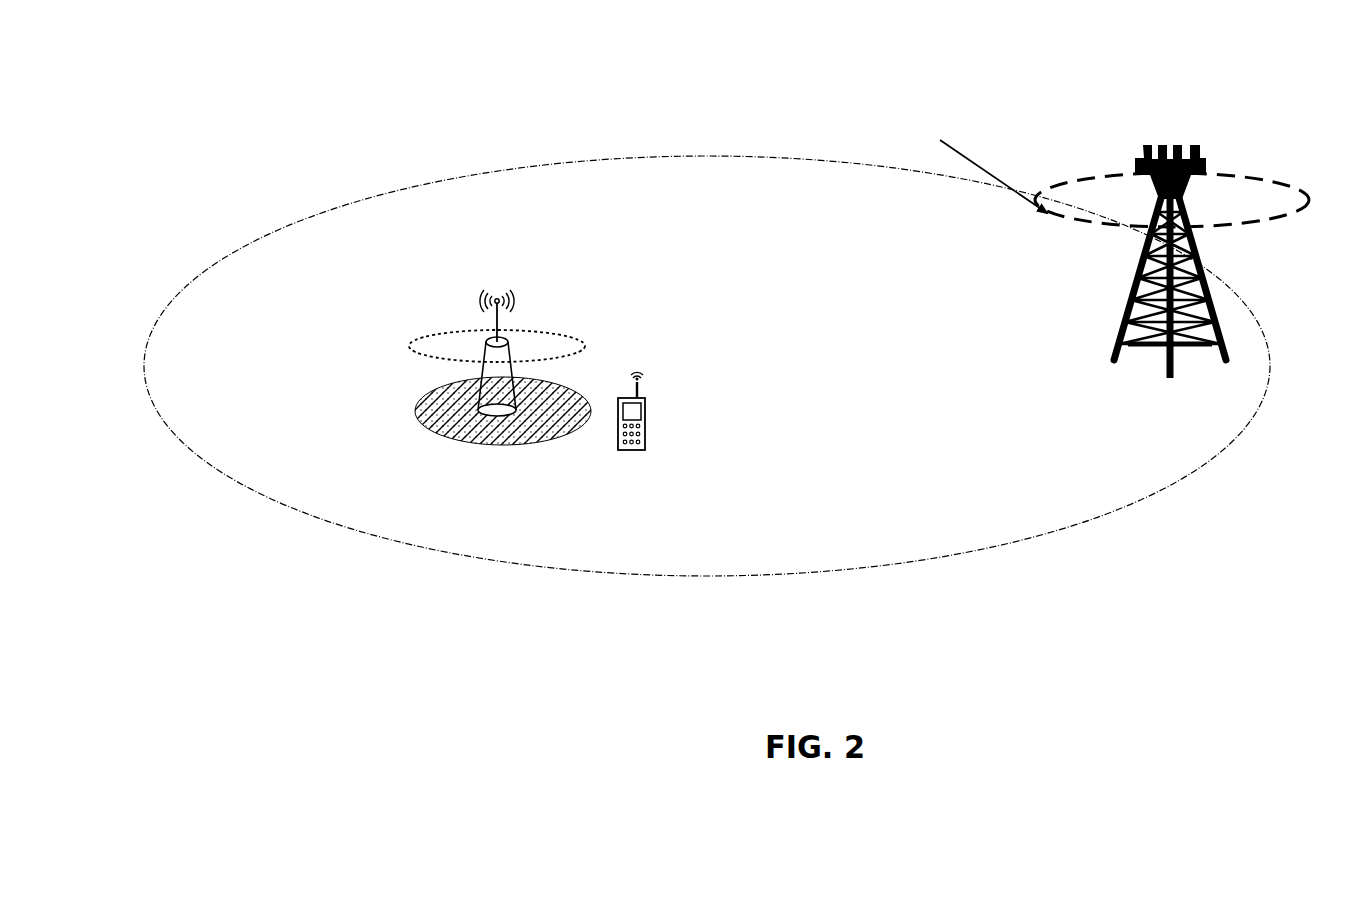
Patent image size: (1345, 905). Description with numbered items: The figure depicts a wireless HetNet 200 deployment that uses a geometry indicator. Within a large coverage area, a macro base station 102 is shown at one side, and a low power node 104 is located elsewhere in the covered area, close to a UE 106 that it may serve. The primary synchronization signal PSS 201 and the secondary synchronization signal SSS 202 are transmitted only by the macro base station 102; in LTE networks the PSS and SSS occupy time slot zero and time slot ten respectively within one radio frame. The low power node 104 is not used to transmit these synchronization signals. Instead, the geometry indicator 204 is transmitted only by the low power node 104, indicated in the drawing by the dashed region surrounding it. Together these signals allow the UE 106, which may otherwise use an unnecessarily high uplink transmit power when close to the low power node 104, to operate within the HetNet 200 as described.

The HetNet 200 is at (605, 88).
The macro base station 102 is at (1207, 237).
The low power node 104 is at (429, 332).
The UE 106 is at (668, 433).
The primary synchronization signal PSS 201 is at (1083, 140).
The secondary synchronization signal SSS 202 is at (949, 149).
The geometry indicator 204 is at (558, 333).